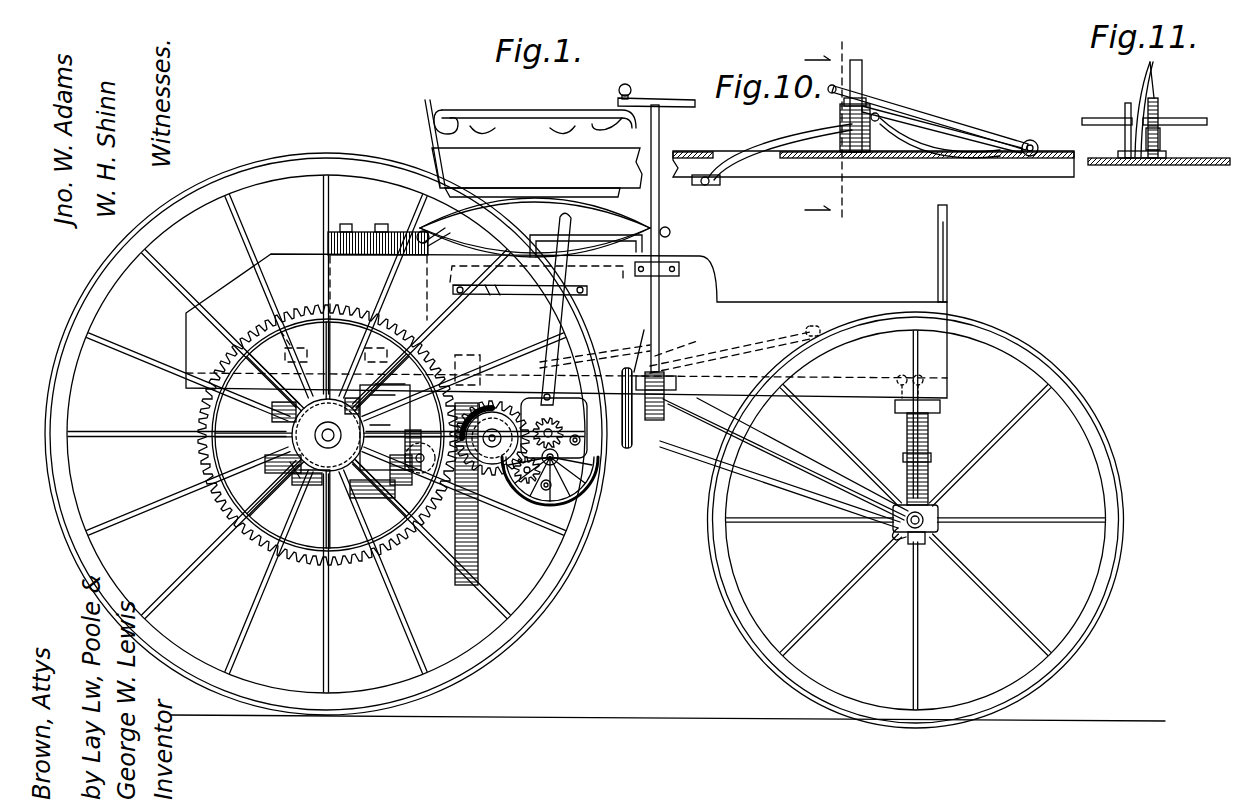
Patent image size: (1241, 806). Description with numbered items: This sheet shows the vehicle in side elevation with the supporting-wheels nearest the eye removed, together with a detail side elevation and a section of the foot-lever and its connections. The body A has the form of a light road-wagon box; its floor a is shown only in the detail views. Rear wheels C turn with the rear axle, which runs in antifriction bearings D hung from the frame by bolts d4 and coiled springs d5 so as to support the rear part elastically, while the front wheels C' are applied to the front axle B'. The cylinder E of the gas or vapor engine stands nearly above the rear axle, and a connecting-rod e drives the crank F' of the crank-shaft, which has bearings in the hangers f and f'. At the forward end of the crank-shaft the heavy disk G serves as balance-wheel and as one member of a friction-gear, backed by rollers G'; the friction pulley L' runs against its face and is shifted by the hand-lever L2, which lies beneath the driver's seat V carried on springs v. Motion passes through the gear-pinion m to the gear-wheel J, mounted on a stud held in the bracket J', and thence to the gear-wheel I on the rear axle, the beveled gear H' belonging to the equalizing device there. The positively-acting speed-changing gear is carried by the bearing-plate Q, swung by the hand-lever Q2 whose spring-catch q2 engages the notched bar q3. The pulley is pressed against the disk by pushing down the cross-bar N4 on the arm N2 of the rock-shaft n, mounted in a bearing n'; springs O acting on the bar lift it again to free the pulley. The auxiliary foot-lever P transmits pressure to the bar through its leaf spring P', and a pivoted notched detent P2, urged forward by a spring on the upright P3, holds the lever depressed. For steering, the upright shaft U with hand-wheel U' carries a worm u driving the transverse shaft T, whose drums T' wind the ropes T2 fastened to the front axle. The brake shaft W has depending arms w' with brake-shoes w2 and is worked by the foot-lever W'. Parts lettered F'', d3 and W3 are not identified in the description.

In FIG. 1, the body of the vehicle A is at (566, 301).
In FIG. 1, the rear supporting-wheels C is at (326, 434).
In FIG. 1, the front supporting-wheels C' is at (916, 520).
In FIG. 1, the front axle B' is at (944, 472).
In FIG. 1, the bearings D is at (276, 410).
In FIG. 1, the cylinder E is at (345, 231).
In FIG. 1, the crank F' is at (272, 443).
In FIG. 1, the motor field piece F'' is at (385, 463).
In FIG. 1, the beveled gear H' is at (314, 502).
In FIG. 1, the connecting-rod e is at (387, 405).
In FIG. 1, the hanger f is at (387, 425).
In FIG. 1, the hanger f' is at (270, 479).
In FIG. 1, the shaft d3 is at (396, 382).
In FIG. 1, the bolts d4 is at (280, 330).
In FIG. 1, the springs d5 is at (390, 360).
In FIG. 1, the disk G is at (484, 494).
In FIG. 1, the backing or supporting rollers G' is at (444, 521).
In FIG. 1, the gear-wheel I is at (425, 535).
In FIG. 1, the gear-pinion m is at (500, 512).
In FIG. 1, the gear-wheel J is at (492, 418).
In FIG. 1, the bracket J' is at (548, 424).
In FIG. 1, the bearing-plate Q is at (592, 478).
In FIG. 1, the hand-lever Q2 is at (600, 348).
In FIG. 1, the friction wheel or pulley L' is at (598, 496).
In FIG. 1, the hand-lever L2 is at (555, 304).
In FIG. 1, the springs v is at (580, 230).
In FIG. 1, the notched bar q3 is at (512, 292).
In FIG. 1, the spring-catch q2 is at (570, 302).
In FIG. 1, the seat V is at (533, 148).
In FIG. 1, the upright shaft U is at (669, 262).
In FIG. 1, the hand-wheel U' is at (656, 85).
In FIG. 1, the transversely-arranged shaft T is at (607, 389).
In FIG. 1, the spools or winding-drums T' is at (637, 451).
In FIG. 1, the ropes or chains T2 is at (790, 470).
In FIG. 1, the brake shaft W is at (597, 346).
In FIG. 1, the brake rod W3 is at (678, 334).
In FIG. 1, the foot-lever W' is at (735, 343).
In FIG. 1, the depending arms w' is at (597, 436).
In FIG. 1, the brake-shoes w2 is at (616, 440).
In FIG. 1, the worm u is at (682, 409).
In FIG. 10, the bottom or floor a is at (980, 178).
In FIG. 11, the bottom or floor a is at (1156, 166).
In FIG. 10, the auxiliary foot-lever P is at (933, 120).
In FIG. 11, the auxiliary foot-lever P is at (1171, 117).
In FIG. 10, the flat or leaf spring P' is at (942, 111).
In FIG. 11, the flat or leaf spring P' is at (1134, 109).
In FIG. 10, the pivoted detent P2 is at (862, 66).
In FIG. 11, the pivoted detent P2 is at (1156, 82).
In FIG. 10, the upright P3 is at (840, 115).
In FIG. 11, the upright P3 is at (1124, 130).
In FIG. 10, the springs O is at (940, 138).
In FIG. 10, the arm N2 is at (768, 130).
In FIG. 10, the cross piece or rod N4 is at (875, 121).
In FIG. 11, the cross piece or rod N4 is at (1092, 120).
In FIG. 10, the bearing n' is at (723, 183).
In FIG. 10, the rock-shaft n is at (709, 199).